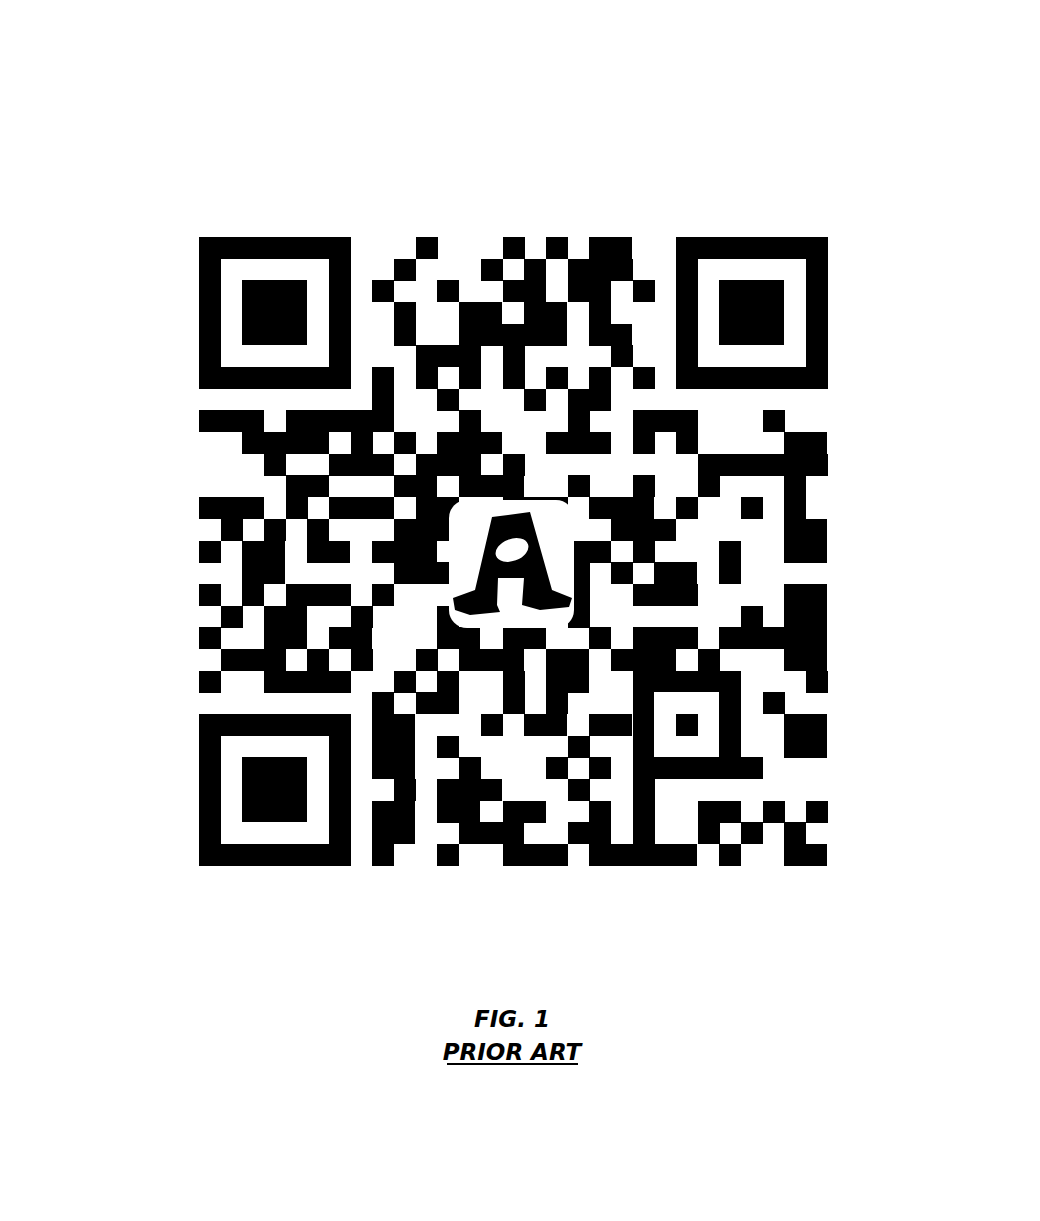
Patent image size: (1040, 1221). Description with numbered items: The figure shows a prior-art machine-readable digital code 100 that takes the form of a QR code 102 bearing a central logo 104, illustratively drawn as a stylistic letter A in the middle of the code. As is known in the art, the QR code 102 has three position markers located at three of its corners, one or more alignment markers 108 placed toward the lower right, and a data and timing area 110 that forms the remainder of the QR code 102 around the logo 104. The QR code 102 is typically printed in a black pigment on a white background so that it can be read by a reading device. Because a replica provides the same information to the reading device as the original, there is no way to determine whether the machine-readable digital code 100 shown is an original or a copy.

The machine-readable digital code 100 is at (102, 86).
The QR code 102 is at (133, 229).
The central logo 104 is at (558, 530).
The alignment marker 108 is at (753, 741).
The data and timing area 110 is at (505, 200).